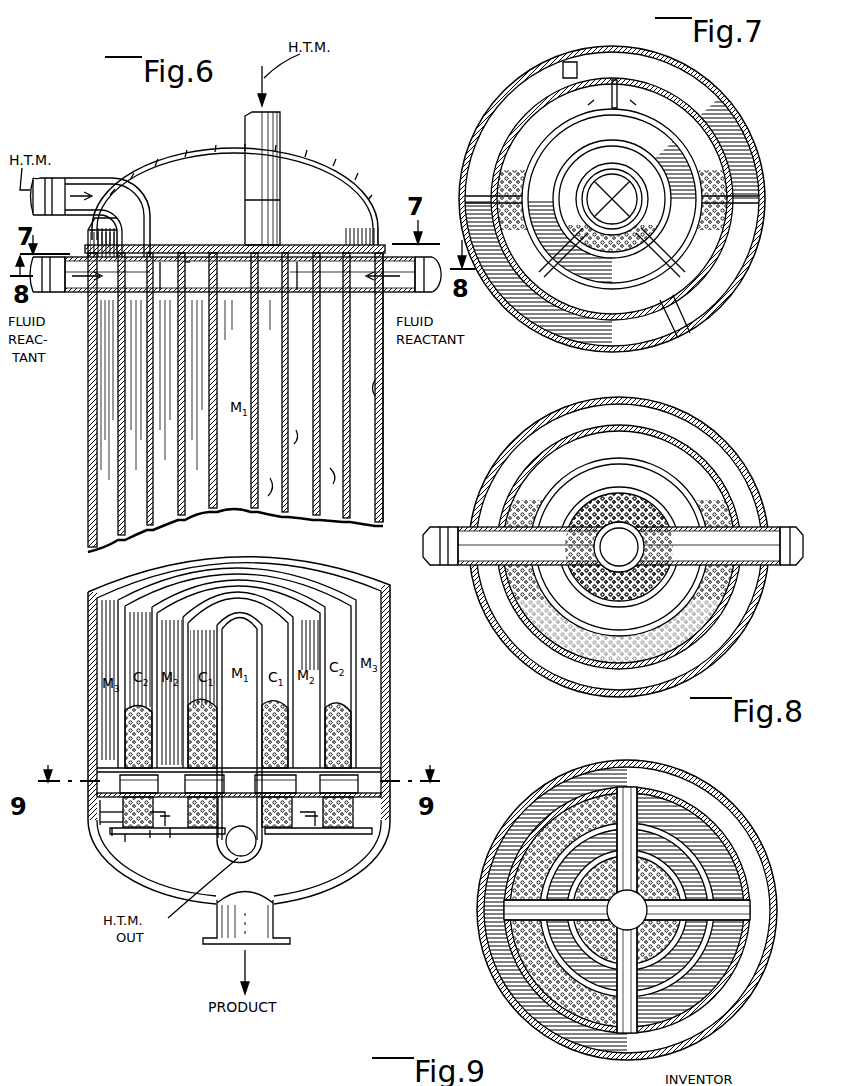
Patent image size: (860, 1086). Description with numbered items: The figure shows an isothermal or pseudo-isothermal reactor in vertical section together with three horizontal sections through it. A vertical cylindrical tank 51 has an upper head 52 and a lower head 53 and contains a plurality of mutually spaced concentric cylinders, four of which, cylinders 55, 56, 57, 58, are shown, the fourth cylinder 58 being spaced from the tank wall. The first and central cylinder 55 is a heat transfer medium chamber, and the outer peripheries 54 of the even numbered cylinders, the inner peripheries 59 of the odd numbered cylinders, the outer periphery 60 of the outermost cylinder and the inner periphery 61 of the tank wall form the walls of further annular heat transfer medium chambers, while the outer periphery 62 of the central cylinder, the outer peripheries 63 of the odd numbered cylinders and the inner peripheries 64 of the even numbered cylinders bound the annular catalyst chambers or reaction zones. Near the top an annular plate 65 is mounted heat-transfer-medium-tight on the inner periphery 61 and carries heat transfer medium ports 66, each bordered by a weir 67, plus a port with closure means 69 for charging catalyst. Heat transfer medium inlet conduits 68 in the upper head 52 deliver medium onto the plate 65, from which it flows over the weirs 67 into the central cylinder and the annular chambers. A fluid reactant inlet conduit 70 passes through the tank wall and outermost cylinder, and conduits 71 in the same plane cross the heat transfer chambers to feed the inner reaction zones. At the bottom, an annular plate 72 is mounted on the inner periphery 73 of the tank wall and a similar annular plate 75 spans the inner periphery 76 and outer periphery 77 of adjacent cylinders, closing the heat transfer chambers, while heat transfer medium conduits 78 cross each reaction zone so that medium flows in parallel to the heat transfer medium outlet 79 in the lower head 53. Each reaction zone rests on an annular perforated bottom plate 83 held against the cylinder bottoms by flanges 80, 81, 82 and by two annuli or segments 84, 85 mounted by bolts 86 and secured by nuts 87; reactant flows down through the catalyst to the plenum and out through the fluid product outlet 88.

In FIG. 6, the vertical cylindrical tank 51 is at (386, 432).
In FIG. 8, the vertical cylindrical tank 51 is at (619, 547).
In FIG. 6, the upper head 52 is at (334, 186).
In FIG. 6, the lower head 53 is at (360, 872).
In FIG. 6, the outer peripheries of even numbered cylinders 54 is at (302, 514).
In FIG. 6, the first and central cylinder 55 is at (252, 300).
In FIG. 6, the second cylinder 56 is at (284, 320).
In FIG. 6, the third cylinder 57 is at (312, 366).
In FIG. 6, the fourth cylinder 58 is at (343, 352).
In FIG. 6, the inner peripheries of odd numbered cylinders 59 is at (315, 414).
In FIG. 6, the outer periphery of outermost cylinder 60 is at (379, 520).
In FIG. 6, the inner periphery of tank wall 61 is at (385, 388).
In FIG. 6, the outer periphery of first central cylinder 62 is at (258, 508).
In FIG. 6, the outer peripheries of odd numbered cylinders 63 is at (343, 505).
In FIG. 6, the inner peripheries of even numbered cylinders 64 is at (303, 472).
In FIG. 6, the annular plate 65 is at (312, 253).
In FIG. 7, the annular plate 65 is at (520, 298).
In FIG. 7, the heat transfer medium ports 66 is at (480, 140).
In FIG. 6, the weir 67 is at (200, 256).
In FIG. 7, the weir 67 is at (570, 62).
In FIG. 6, the heat transfer medium inlet conduit 68 is at (108, 180).
In FIG. 7, the heat transfer medium inlet conduit 68 is at (612, 199).
In FIG. 7, the port and closure means 69 is at (598, 128).
In FIG. 6, the fluid reactant inlet conduit 70 is at (86, 262).
In FIG. 8, the fluid reactant inlet conduit 70 is at (445, 562).
In FIG. 6, the fluid reactant inlet conduits 71 is at (162, 275).
In FIG. 8, the fluid reactant inlet conduits 71 is at (558, 566).
In FIG. 6, the annular plate 72 is at (110, 796).
In FIG. 9, the annular plate 72 is at (500, 938).
In FIG. 6, the inner periphery of tank wall 73 is at (96, 702).
In FIG. 6, the annular plate 75 is at (178, 830).
In FIG. 9, the annular plate 75 is at (690, 878).
In FIG. 6, the inner periphery of next cylinder 76 is at (176, 572).
In FIG. 6, the outer periphery of inwardly succeeding cylinder 77 is at (184, 610).
In FIG. 6, the heat transfer medium conduit 78 is at (185, 778).
In FIG. 9, the heat transfer medium conduit 78 is at (740, 905).
In FIG. 6, the heat transfer medium outlet 79 is at (252, 850).
In FIG. 6, the flange 80 is at (112, 826).
In FIG. 6, the flange 81 is at (204, 836).
In FIG. 6, the flange 82 is at (152, 838).
In FIG. 6, the annular perforated bottom plate 83 is at (138, 845).
In FIG. 6, the annulus or segment 84 is at (170, 840).
In FIG. 6, the annulus or segment 85 is at (122, 840).
In FIG. 6, the bolts 86 is at (110, 814).
In FIG. 6, the nuts 87 is at (112, 870).
In FIG. 6, the fluid product outlet 88 is at (276, 921).